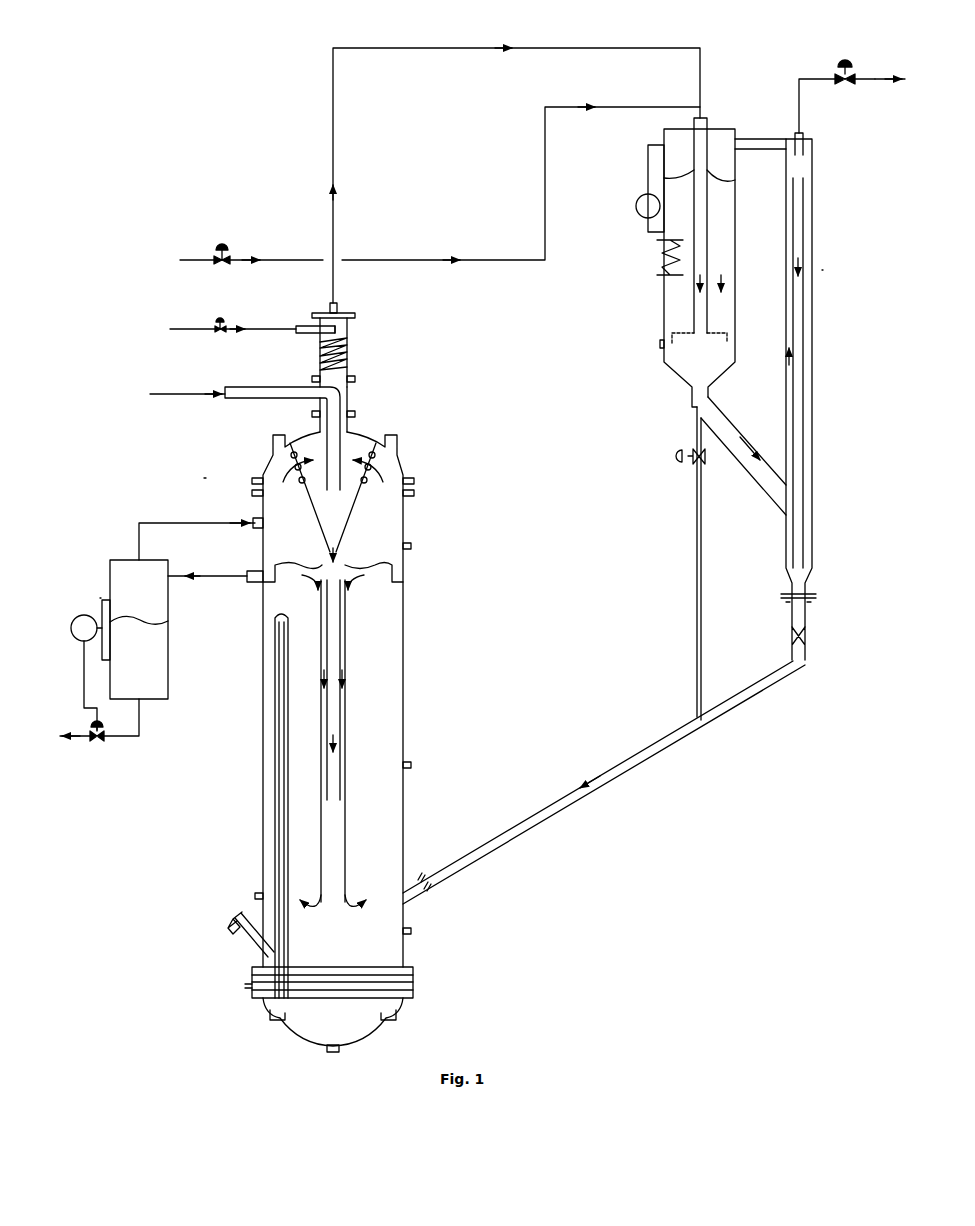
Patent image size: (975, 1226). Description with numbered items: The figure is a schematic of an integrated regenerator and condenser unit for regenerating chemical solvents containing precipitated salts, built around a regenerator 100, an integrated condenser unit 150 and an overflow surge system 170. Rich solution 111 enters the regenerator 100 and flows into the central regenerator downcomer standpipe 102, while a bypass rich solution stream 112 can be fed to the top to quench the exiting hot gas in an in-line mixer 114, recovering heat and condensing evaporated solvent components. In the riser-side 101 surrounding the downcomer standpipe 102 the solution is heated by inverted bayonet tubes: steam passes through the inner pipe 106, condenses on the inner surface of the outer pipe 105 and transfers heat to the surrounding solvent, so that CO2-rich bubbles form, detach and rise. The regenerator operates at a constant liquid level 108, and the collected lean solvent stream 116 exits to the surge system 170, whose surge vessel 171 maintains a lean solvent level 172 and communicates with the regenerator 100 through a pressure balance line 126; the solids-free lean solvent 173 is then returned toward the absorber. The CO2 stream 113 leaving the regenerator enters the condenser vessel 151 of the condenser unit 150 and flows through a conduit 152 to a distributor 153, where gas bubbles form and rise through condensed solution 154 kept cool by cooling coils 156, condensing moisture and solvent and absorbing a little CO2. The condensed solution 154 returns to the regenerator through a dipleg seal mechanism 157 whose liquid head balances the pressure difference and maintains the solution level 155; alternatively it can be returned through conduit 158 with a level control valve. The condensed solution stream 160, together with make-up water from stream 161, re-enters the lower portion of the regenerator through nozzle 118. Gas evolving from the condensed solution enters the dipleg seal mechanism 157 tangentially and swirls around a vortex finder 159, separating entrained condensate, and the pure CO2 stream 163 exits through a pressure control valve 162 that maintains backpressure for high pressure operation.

The regenerator 100 is at (205, 478).
The riser-side of the regenerator 101 is at (395, 735).
The central regenerator downcomer standpipe 102 is at (395, 762).
The outer pipe of inverted bayonet tube 105 is at (276, 780).
The inner pipe of inverted bayonet tube 106 is at (277, 800).
The liquid level 108 is at (378, 566).
The rich solution stream 111 is at (180, 396).
The rich solution bypass stream 112 is at (254, 330).
The CO2 stream 113 is at (334, 150).
The in-line mixer 114 is at (340, 352).
The collected lean solvent stream 116 is at (202, 578).
The nozzle 118 is at (418, 898).
The pressure balance line 126 is at (202, 521).
The integrated condenser unit 150 is at (822, 270).
The condenser vessel 151 is at (664, 140).
The conduit 152 is at (706, 208).
The distributor 153 is at (680, 333).
The condensed solution 154 is at (720, 258).
The solution level 155 is at (710, 180).
The cooling coils 156 is at (660, 265).
The dipleg seal mechanism 157 is at (813, 297).
The conduit 158 is at (696, 506).
The vortex finder 159 is at (808, 145).
The condensed solution stream 160 is at (805, 663).
The make-up water stream 161 is at (269, 261).
The pressure control valve 162 is at (841, 86).
The pure CO2 stream 163 is at (875, 77).
The overflow surge system 170 is at (100, 598).
The surge vessel 171 is at (170, 655).
The lean solvent level 172 is at (150, 621).
The lean solvent stream 173 is at (80, 742).